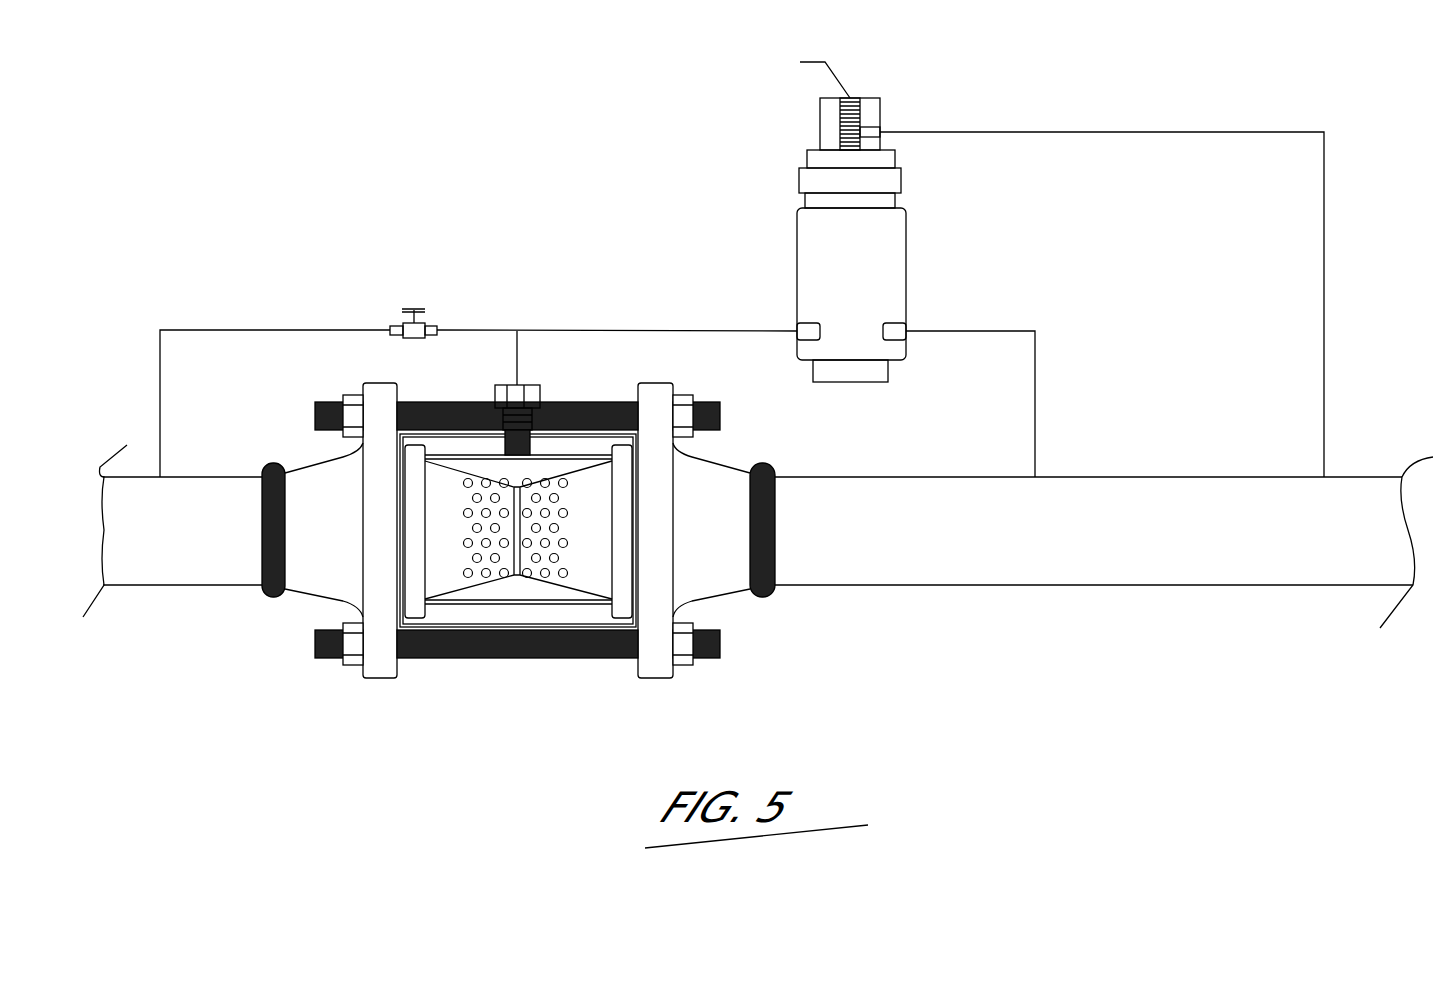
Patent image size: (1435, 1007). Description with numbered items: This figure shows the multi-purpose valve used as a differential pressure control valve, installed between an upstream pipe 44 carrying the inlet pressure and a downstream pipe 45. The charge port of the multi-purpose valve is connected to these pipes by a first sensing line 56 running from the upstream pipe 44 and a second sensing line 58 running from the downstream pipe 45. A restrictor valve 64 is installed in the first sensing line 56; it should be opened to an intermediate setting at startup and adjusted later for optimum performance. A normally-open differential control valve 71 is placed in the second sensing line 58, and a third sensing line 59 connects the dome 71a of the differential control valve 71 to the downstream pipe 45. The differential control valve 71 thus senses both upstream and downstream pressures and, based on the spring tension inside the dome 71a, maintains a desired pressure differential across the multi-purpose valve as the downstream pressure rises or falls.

The upstream pipe 44 is at (223, 572).
The downstream pipe 45 is at (1147, 570).
The first sensing line 56 is at (220, 330).
The second sensing line 58 is at (1038, 378).
The third sensing line 59 is at (1098, 132).
The restrictor valve 64 is at (418, 340).
The differential control valve 71 is at (827, 250).
The dome 71a is at (870, 117).